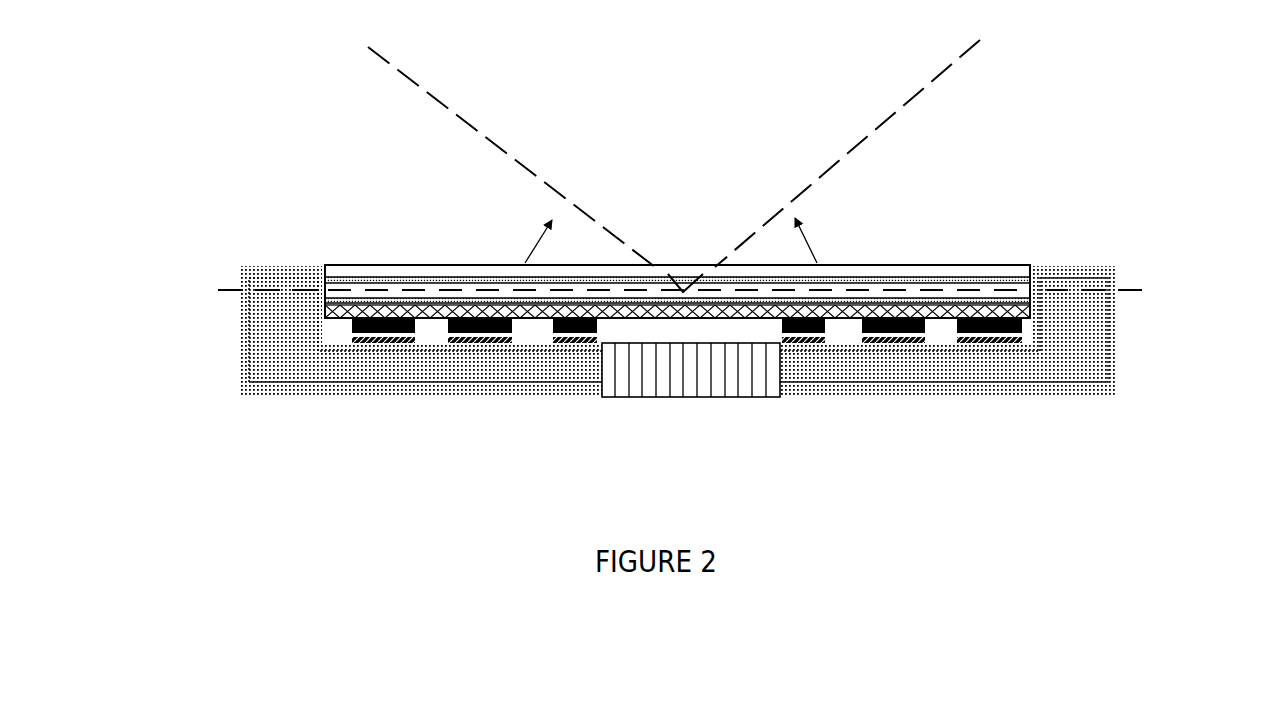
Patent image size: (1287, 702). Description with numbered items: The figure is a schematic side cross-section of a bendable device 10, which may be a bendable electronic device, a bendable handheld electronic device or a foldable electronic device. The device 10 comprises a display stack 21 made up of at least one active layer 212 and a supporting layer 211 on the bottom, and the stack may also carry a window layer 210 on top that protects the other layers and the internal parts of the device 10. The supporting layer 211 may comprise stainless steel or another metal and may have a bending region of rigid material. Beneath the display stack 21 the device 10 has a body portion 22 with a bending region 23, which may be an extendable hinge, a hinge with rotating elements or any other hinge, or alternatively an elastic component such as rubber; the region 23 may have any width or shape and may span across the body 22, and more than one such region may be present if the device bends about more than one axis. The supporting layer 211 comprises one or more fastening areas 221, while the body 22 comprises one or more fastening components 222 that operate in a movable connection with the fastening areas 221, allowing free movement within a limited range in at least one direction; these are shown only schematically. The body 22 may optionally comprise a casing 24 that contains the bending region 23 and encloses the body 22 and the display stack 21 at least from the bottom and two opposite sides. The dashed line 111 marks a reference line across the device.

The bendable device 10 is at (657, 78).
The display stack 21 is at (679, 266).
The window layer 210 is at (1010, 270).
The supporting layer 211 is at (333, 317).
The active layer 212 is at (1030, 293).
The reference line 111 is at (219, 290).
The body portion 22 is at (543, 372).
The fastening areas 221 is at (1023, 331).
The fastening components 222 is at (988, 344).
The bending region 23 is at (723, 380).
The casing 24 is at (445, 395).